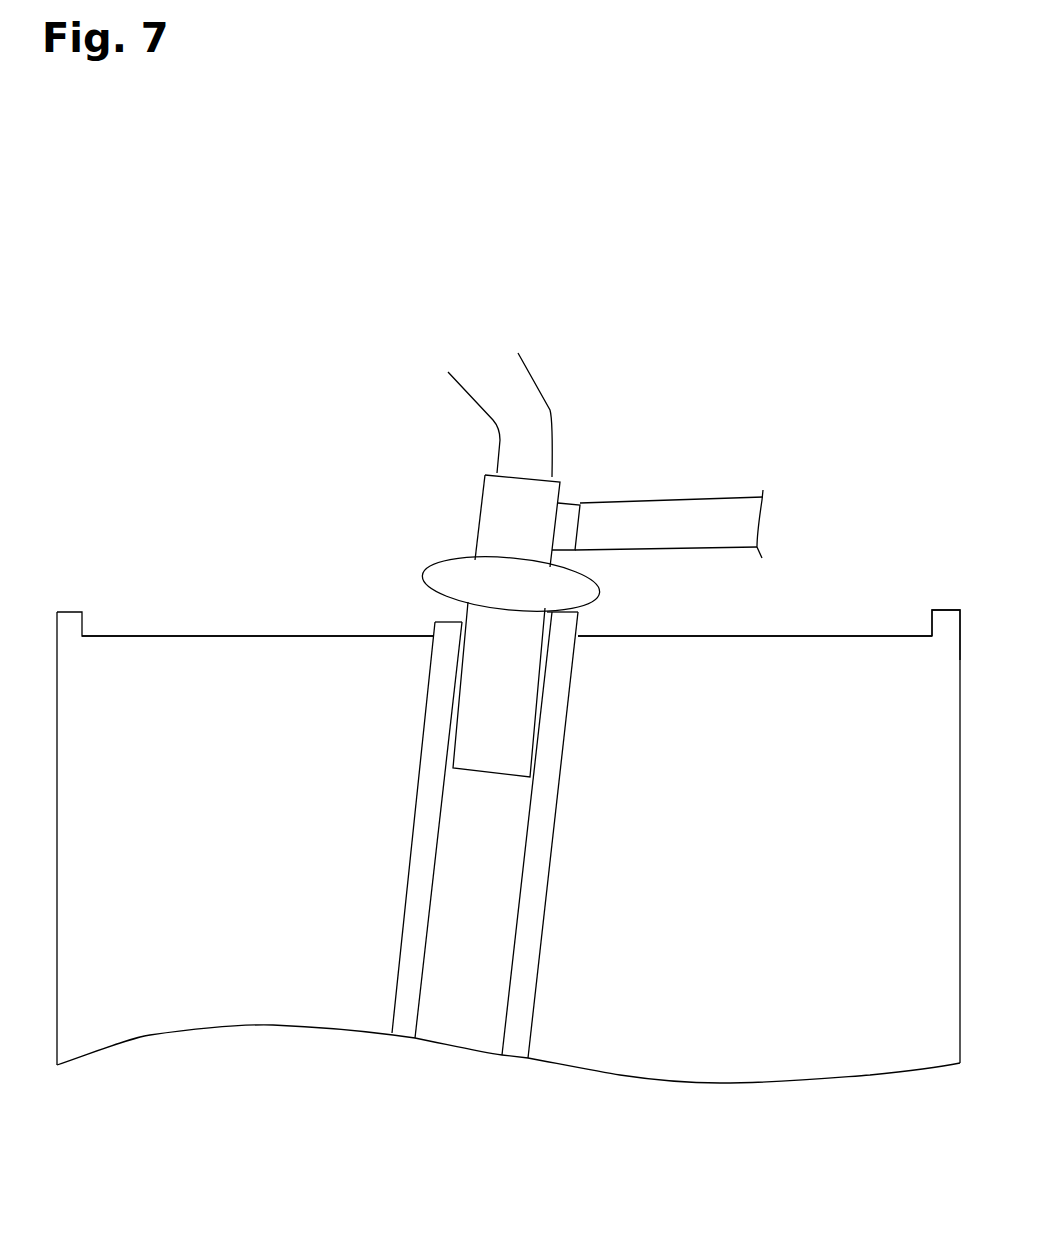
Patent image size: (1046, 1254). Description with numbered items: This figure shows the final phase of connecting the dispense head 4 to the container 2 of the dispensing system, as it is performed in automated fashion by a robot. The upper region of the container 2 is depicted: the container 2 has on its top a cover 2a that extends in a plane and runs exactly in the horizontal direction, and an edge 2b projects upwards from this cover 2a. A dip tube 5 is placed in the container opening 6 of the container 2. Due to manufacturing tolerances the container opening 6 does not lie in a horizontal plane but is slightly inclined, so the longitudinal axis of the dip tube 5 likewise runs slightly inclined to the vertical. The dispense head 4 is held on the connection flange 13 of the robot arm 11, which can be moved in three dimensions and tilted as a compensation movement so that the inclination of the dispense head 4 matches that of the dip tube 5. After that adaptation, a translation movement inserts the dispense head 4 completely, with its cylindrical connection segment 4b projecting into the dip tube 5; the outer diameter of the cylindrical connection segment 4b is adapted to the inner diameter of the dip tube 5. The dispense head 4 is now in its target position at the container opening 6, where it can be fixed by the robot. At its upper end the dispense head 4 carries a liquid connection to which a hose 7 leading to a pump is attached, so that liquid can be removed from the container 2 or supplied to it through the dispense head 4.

The container 2 is at (706, 621).
The cover 2a is at (785, 635).
The edge 2b is at (921, 597).
The dispense head 4 is at (462, 511).
The cylindrical connection segment 4b is at (516, 695).
The dip tube 5 is at (553, 847).
The container opening 6 is at (432, 623).
The hose 7 is at (532, 413).
The robot arm 11 is at (683, 539).
The connection flange 13 is at (565, 510).